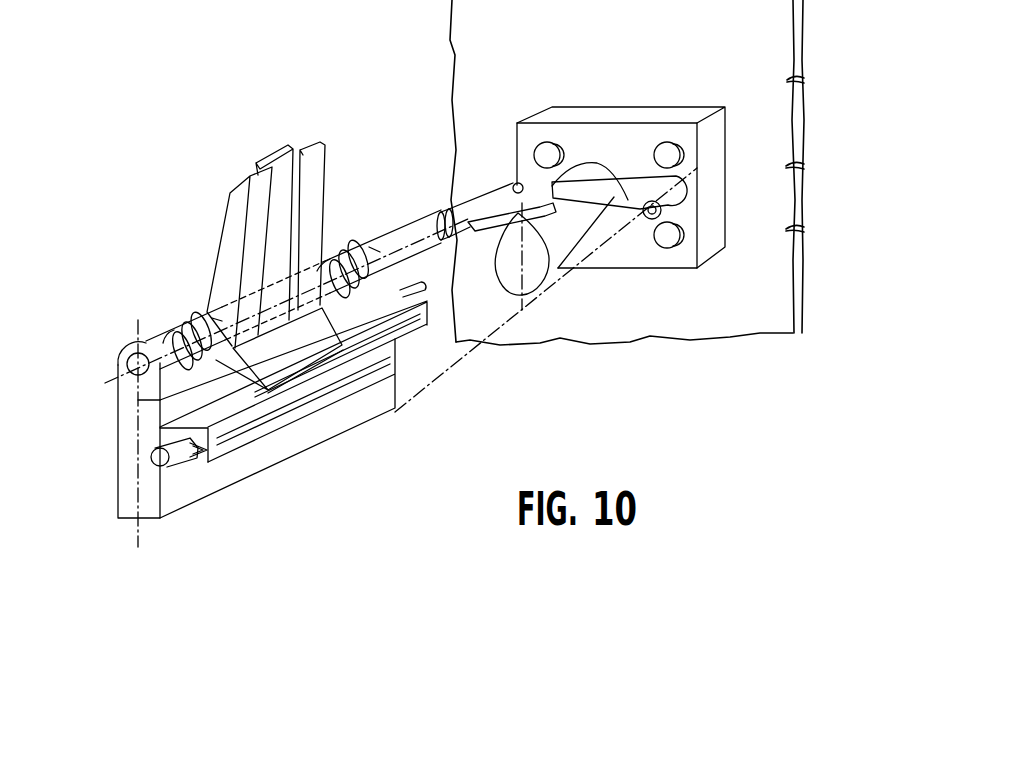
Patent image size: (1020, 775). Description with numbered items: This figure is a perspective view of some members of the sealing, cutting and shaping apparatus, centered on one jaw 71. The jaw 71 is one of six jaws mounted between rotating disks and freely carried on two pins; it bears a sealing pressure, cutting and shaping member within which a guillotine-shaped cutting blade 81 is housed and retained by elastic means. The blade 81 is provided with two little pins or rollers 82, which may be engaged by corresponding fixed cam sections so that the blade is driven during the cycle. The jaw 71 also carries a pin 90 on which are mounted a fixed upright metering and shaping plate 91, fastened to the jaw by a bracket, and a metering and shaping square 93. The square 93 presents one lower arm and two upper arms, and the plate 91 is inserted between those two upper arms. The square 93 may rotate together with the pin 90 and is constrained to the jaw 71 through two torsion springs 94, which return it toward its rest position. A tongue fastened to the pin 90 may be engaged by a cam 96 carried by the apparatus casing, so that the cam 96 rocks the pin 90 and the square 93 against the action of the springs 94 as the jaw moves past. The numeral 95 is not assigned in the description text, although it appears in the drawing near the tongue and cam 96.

The jaw 71 is at (116, 449).
The guillotine-shaped cutting blade 81 is at (204, 460).
The little pins or rollers 82 is at (162, 455).
The pin 90 is at (411, 232).
The fixed upright metering and shaping plate 91 is at (276, 150).
The metering and shaping square 93 is at (237, 217).
The torsion springs 94 is at (179, 325).
The link 95 is at (496, 215).
The cam 96 is at (511, 270).